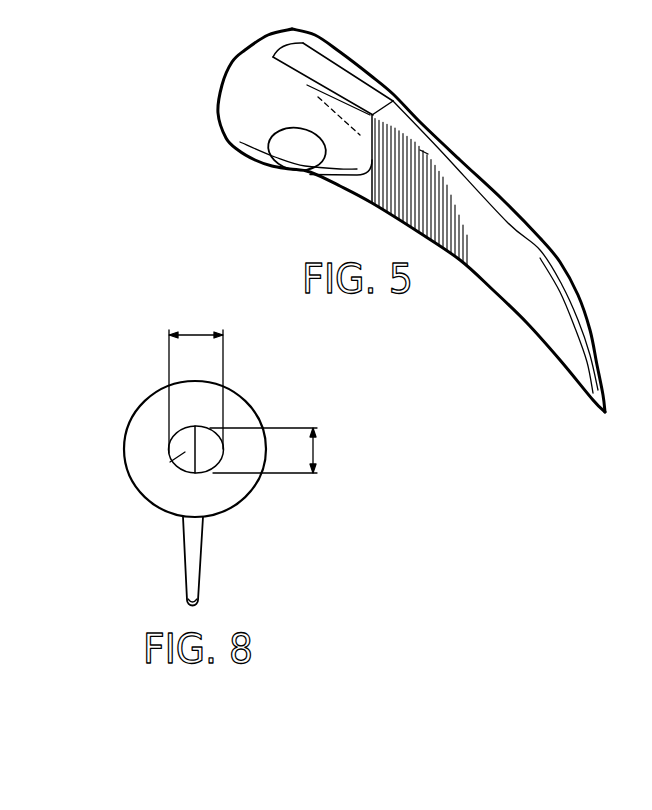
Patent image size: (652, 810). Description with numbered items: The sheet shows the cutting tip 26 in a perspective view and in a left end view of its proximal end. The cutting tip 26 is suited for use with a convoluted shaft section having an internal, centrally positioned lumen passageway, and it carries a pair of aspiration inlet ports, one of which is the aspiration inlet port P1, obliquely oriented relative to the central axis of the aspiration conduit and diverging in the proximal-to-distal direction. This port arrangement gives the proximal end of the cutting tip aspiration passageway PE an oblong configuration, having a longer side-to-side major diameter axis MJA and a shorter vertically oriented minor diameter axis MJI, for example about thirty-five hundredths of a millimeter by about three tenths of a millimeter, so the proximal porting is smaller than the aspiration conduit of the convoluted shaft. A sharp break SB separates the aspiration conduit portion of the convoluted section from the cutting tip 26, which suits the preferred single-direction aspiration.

In FIG. 5, the cutting tip 26 is at (440, 133).
In FIG. 8, the cutting tip 26 is at (214, 553).
In FIG. 5, the aspiration inlet port P1 is at (292, 152).
In FIG. 8, the proximal end of the cutting tip aspiration passageway PE is at (183, 440).
In FIG. 8, the sharp break SB is at (185, 452).
In FIG. 8, the major diameter axis MJA is at (196, 380).
In FIG. 8, the minor diameter axis MJI is at (280, 450).